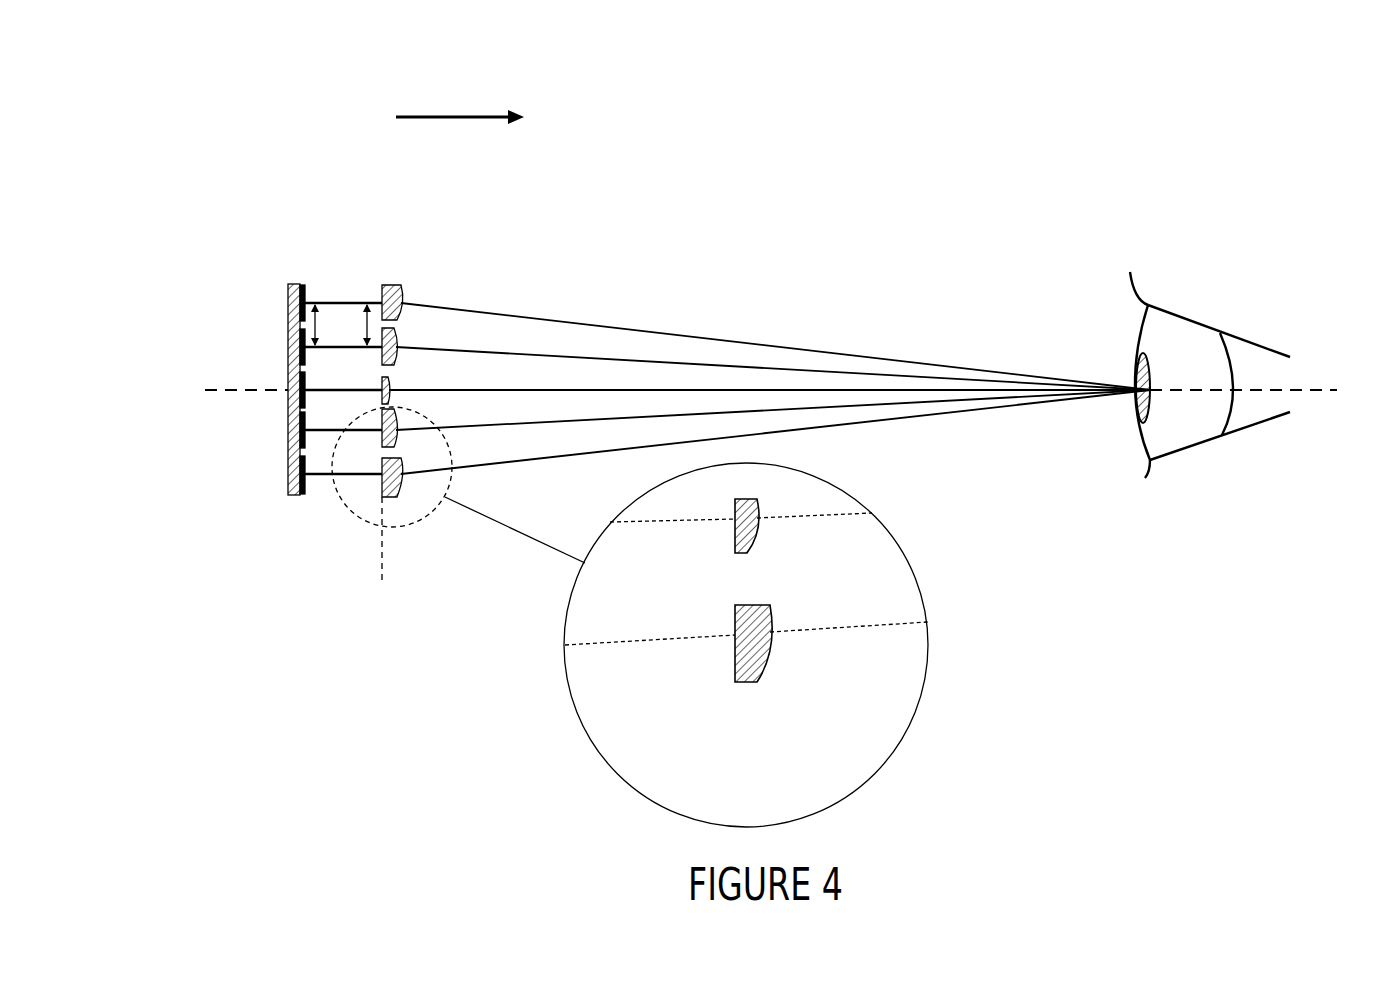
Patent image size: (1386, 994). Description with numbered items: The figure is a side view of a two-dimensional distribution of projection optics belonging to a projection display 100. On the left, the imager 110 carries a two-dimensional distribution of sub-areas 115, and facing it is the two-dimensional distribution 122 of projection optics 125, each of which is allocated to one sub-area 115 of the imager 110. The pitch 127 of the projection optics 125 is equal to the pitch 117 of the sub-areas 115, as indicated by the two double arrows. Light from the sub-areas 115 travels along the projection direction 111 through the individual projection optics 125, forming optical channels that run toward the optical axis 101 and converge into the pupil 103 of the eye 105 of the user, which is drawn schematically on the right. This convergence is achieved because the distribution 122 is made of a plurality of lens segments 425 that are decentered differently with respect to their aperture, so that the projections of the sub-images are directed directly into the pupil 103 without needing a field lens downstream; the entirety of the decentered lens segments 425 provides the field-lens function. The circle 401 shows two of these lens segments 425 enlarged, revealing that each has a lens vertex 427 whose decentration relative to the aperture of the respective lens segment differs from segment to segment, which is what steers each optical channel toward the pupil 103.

The projection display 100 is at (176, 165).
The optical axis 101 is at (1310, 388).
The pupil 103 is at (1136, 372).
The eye 105 is at (1169, 360).
The imager 110 is at (288, 306).
The projection direction 111 is at (437, 116).
The sub-areas 115 is at (306, 289).
The pitch of the sub-areas 117 is at (313, 326).
The two-dimensional distribution of projection optics 122 is at (436, 339).
The projection optics 125 is at (399, 292).
The pitch of the projection optics 127 is at (366, 340).
The circle 401 is at (666, 617).
The lens segments 425 is at (735, 552).
The lens vertexes 427 is at (757, 507).